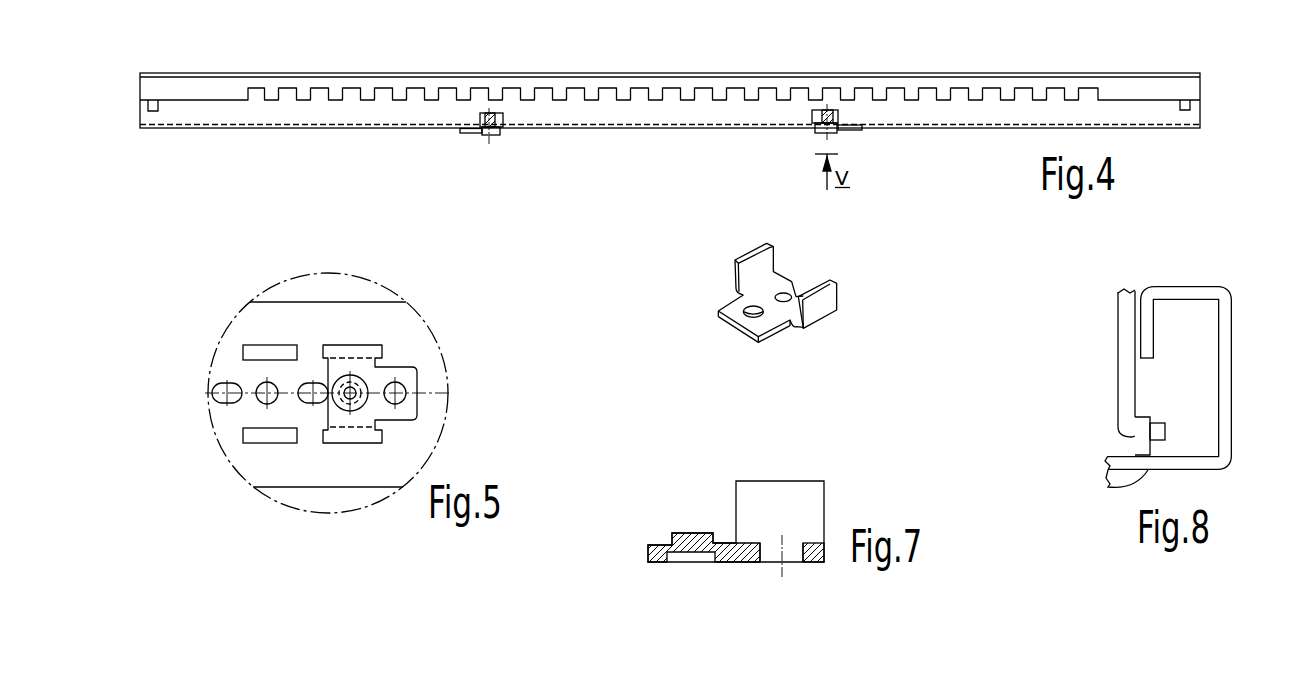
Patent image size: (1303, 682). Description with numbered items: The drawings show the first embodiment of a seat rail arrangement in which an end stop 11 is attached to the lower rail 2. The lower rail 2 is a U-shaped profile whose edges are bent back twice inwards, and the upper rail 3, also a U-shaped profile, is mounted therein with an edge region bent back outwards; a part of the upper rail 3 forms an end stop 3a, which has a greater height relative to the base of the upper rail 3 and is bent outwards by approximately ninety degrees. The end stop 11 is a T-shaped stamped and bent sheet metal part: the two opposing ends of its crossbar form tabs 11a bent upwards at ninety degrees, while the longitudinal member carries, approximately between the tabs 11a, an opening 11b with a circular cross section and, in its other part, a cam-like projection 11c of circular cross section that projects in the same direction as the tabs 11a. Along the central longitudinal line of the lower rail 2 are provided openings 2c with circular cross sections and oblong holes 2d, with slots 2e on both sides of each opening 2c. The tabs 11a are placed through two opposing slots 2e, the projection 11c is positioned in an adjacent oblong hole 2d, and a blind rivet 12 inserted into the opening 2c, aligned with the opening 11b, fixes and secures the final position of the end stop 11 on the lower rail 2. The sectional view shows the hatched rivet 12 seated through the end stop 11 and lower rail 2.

In FIG. 4, the lower rail 2 is at (670, 100).
In FIG. 8, the lower rail 2 is at (1225, 373).
In FIG. 5, the opening 2c is at (258, 386).
In FIG. 5, the oblong hole 2d is at (213, 390).
In FIG. 5, the slot 2e is at (258, 350).
In FIG. 8, the upper rail 3 is at (1122, 355).
In FIG. 8, the end stop of the second seat rail 3a is at (1162, 432).
In FIG. 4, the end stop 11 is at (470, 131).
In FIG. 5, the end stop 11 is at (338, 362).
In FIG. 6, the end stop 11 is at (751, 290).
In FIG. 6, the tab 11a is at (769, 241).
In FIG. 8, the tab 11a is at (1142, 443).
In FIG. 6, the opening 11b is at (825, 271).
In FIG. 7, the opening 11b is at (770, 552).
In FIG. 6, the cam-like projection 11c is at (715, 318).
In FIG. 7, the cam-like projection 11c is at (690, 536).
In FIG. 4, the blind rivet 12 is at (488, 114).
In FIG. 5, the blind rivet 12 is at (365, 385).